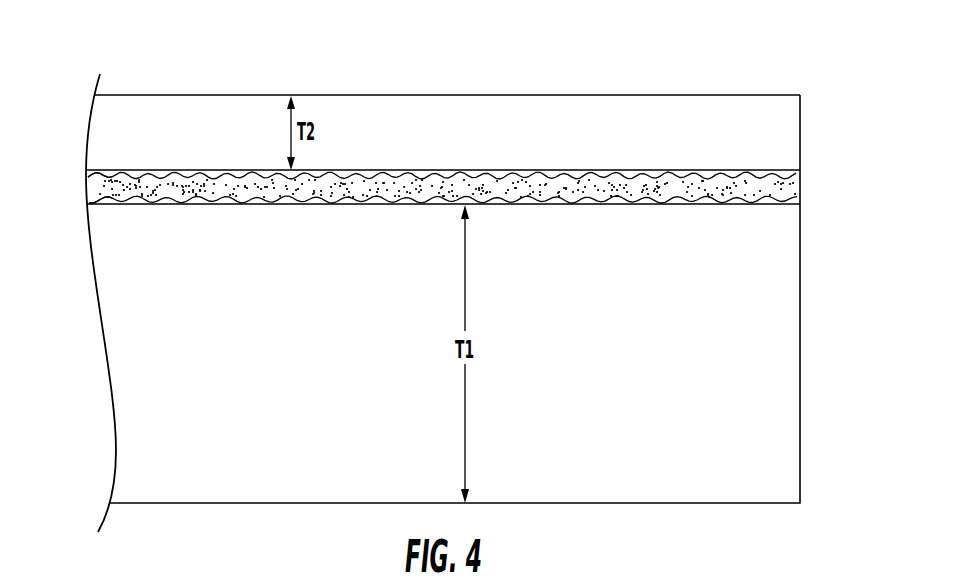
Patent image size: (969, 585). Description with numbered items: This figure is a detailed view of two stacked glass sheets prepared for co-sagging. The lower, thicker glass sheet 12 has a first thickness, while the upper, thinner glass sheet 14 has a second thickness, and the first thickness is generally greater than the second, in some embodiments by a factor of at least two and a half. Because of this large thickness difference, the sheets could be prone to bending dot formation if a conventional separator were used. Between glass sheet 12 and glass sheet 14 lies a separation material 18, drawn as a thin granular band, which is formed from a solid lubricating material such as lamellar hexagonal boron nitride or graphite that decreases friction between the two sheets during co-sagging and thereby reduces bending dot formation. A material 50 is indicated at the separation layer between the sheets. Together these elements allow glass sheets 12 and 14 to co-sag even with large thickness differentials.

The glass sheet 12 is at (780, 459).
The glass sheet 14 is at (780, 137).
The separation material 18 is at (787, 188).
The material 50 is at (111, 188).